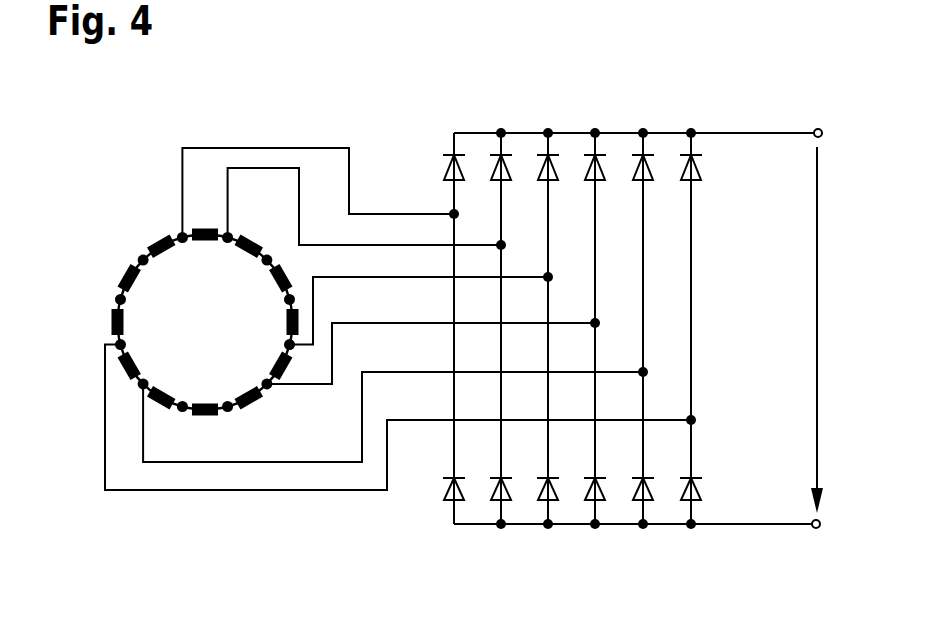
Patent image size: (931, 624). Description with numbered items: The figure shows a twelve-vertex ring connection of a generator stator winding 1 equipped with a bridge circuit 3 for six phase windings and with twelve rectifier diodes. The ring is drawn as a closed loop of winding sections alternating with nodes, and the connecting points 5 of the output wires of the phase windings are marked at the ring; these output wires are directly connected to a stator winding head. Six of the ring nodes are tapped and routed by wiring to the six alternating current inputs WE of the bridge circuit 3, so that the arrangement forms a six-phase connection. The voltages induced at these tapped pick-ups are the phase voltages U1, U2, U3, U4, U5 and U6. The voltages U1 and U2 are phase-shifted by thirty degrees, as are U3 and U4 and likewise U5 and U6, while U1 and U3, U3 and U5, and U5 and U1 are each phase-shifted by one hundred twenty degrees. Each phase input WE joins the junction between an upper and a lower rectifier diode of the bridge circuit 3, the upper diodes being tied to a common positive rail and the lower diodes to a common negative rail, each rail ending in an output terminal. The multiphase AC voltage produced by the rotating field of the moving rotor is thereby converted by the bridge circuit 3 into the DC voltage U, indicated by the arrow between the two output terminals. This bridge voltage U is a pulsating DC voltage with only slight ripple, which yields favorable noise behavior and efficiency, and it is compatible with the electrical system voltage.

The generator stator winding 1 is at (84, 220).
The bridge circuit 3 is at (690, 95).
The connecting points 5 is at (289, 299).
The voltage U1 is at (318, 193).
The voltage U2 is at (364, 208).
The voltage U3 is at (419, 294).
The voltage U4 is at (431, 336).
The voltage U5 is at (393, 398).
The voltage U6 is at (398, 417).
The DC voltage U is at (830, 330).
The alternating current inputs WE is at (392, 528).